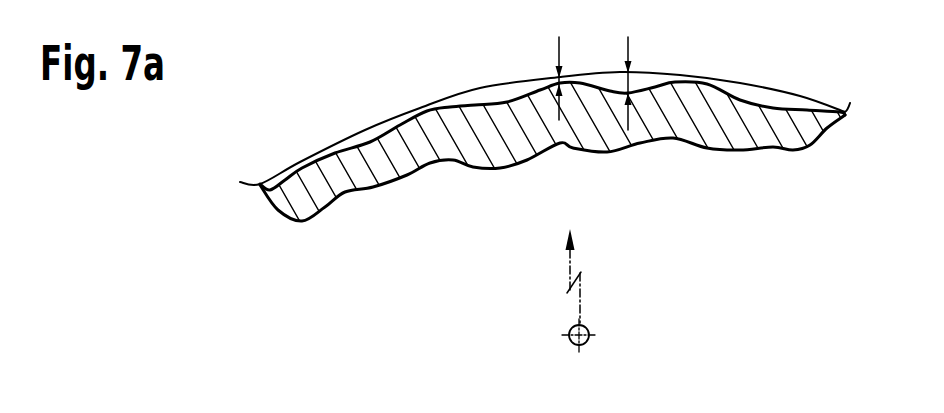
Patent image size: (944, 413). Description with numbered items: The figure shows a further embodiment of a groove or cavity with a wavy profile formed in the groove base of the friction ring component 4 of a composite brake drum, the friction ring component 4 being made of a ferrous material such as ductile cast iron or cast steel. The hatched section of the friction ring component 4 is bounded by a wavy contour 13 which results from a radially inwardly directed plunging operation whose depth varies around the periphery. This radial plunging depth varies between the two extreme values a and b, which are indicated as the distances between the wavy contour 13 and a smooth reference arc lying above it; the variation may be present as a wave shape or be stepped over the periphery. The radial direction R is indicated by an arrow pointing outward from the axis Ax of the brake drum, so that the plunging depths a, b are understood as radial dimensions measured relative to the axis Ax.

The friction ring component 4 is at (534, 150).
The wavy outer surface / contour 13 is at (667, 87).
The extreme value of radial plunging depth a is at (557, 47).
The extreme value of radial plunging depth b is at (628, 43).
The radial direction R is at (582, 273).
The axis of rotation Ax is at (583, 339).